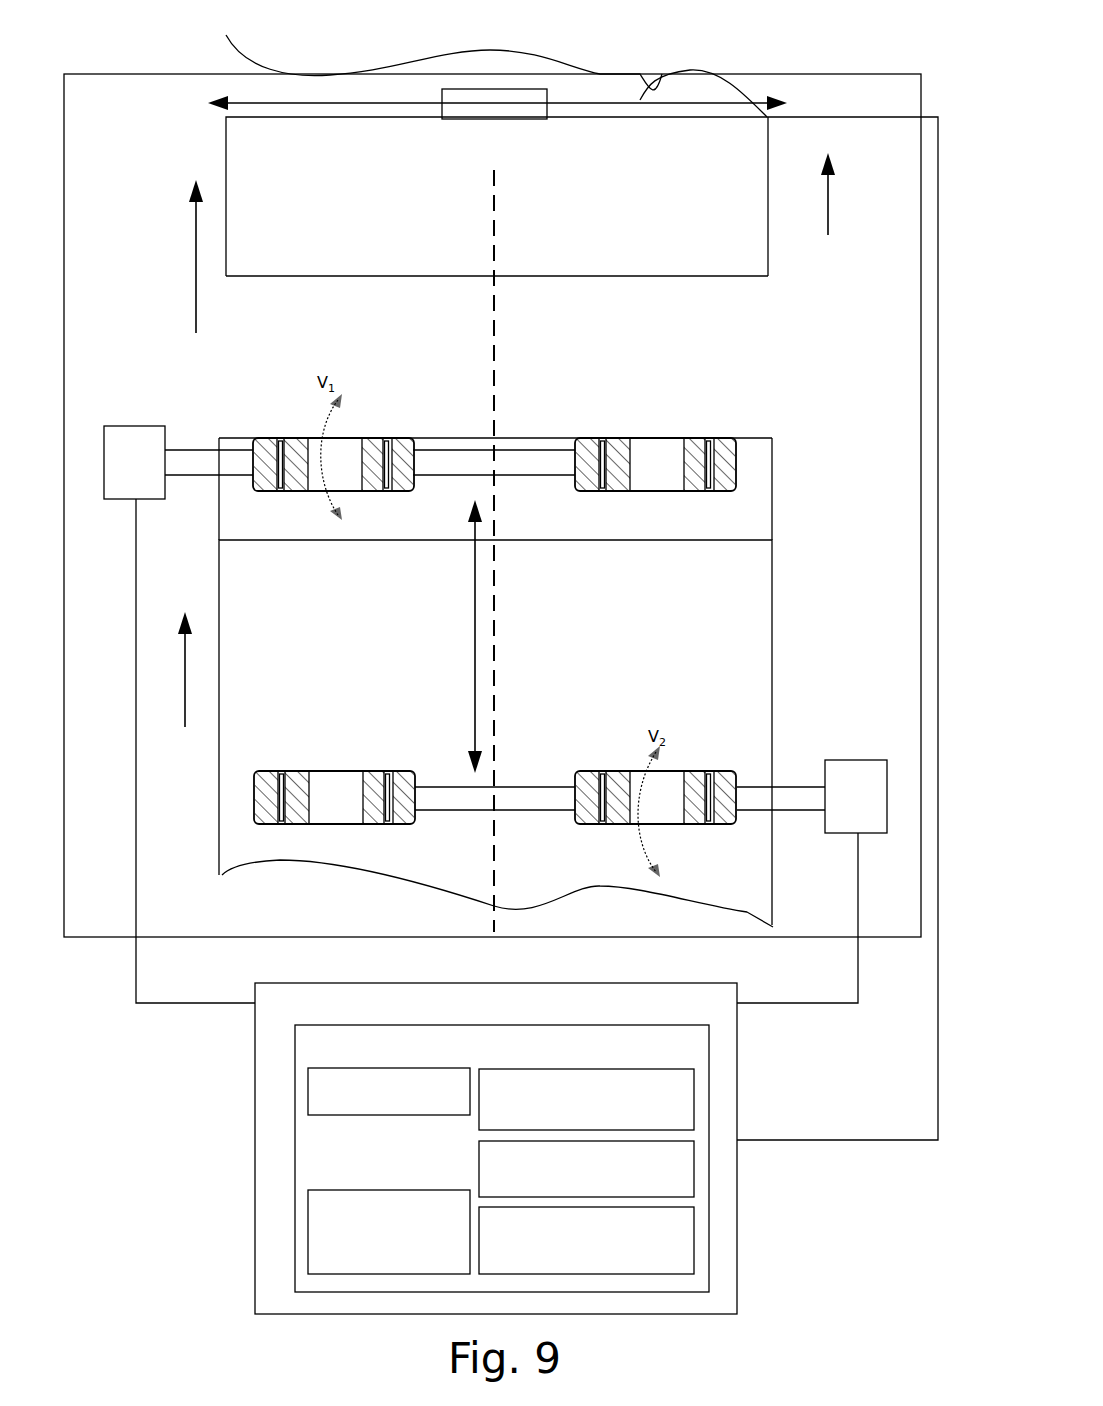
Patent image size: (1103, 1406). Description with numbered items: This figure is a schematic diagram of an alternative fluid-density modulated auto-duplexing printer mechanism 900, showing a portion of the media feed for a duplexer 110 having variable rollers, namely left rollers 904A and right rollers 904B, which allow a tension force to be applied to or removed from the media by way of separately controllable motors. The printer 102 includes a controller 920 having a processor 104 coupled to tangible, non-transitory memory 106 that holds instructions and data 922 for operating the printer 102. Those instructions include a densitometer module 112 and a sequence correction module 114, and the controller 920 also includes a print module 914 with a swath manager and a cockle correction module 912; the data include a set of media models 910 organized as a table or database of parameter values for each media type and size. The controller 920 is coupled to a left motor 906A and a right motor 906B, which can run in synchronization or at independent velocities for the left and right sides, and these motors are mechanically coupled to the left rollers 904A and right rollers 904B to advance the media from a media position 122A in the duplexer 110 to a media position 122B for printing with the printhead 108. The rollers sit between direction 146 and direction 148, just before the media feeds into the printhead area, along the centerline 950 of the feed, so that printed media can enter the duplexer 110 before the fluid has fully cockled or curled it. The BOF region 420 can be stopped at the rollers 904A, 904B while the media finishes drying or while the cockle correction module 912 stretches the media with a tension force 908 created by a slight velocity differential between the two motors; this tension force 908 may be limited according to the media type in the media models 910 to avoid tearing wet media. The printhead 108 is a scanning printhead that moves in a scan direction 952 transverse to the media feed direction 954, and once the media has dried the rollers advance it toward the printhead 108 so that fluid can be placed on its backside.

The fluid-density modulated auto-duplexing printer mechanism 900 is at (775, 52).
The printer 102 is at (492, 505).
The printhead 108 is at (548, 76).
The scan direction 952 is at (670, 74).
The media position for printing 122B is at (573, 618).
The media feed direction 954 is at (844, 194).
The direction 148 is at (175, 256).
The centerline 950 is at (494, 235).
The left motor 906A is at (143, 426).
The right motor 906B is at (852, 760).
The left rollers 904A is at (345, 438).
The right rollers 904B is at (330, 771).
The duplexer 110 is at (753, 405).
The BOF region 420 is at (495, 482).
The media position in the duplexer 122A is at (496, 682).
The tension force 908 is at (475, 590).
The direction 146 is at (169, 669).
The processor 104 is at (496, 1148).
The memory 106 is at (502, 1158).
The media models 910 is at (308, 1092).
The cockle correction module 912 is at (694, 1098).
The densitometer module 112 is at (694, 1170).
The sequence correction module 114 is at (308, 1226).
The print module with swath manager 914 is at (694, 1224).
The instructions and data 922 is at (709, 1250).
The controller 920 is at (737, 1062).